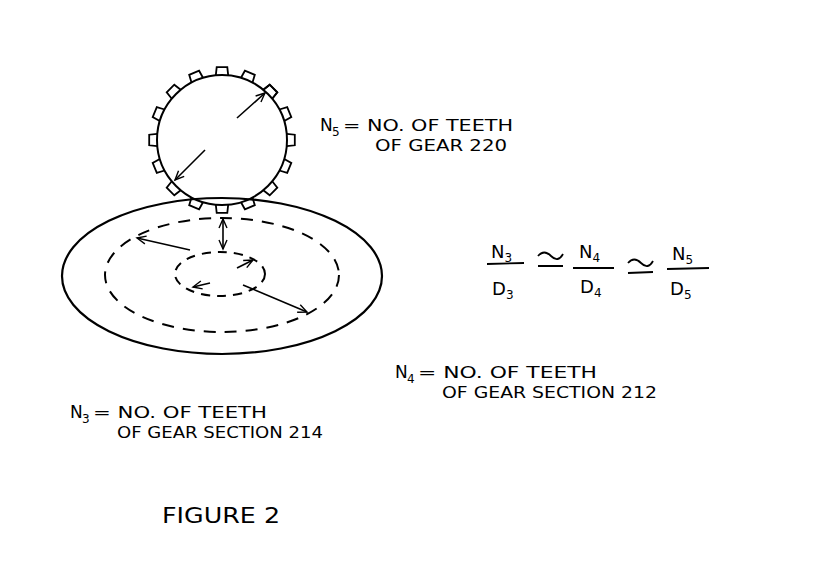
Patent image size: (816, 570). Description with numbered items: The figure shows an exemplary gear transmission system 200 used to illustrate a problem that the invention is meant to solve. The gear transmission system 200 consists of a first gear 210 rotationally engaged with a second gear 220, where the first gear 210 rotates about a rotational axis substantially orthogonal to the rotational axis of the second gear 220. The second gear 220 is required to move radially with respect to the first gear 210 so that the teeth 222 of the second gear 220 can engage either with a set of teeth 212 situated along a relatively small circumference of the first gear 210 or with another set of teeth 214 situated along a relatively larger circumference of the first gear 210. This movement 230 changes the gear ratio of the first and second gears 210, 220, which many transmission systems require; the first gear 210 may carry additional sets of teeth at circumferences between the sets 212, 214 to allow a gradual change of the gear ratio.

The gear transmission system 200 is at (373, 73).
The first gear 210 is at (381, 247).
The set of teeth 212 is at (186, 284).
The set of teeth 214 is at (322, 302).
The second gear 220 is at (167, 95).
The teeth 222 is at (253, 78).
The movement 230 is at (227, 238).